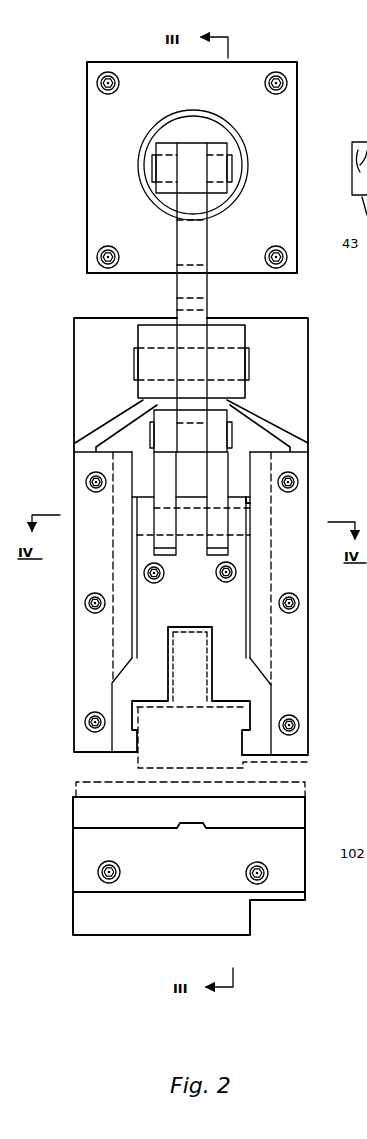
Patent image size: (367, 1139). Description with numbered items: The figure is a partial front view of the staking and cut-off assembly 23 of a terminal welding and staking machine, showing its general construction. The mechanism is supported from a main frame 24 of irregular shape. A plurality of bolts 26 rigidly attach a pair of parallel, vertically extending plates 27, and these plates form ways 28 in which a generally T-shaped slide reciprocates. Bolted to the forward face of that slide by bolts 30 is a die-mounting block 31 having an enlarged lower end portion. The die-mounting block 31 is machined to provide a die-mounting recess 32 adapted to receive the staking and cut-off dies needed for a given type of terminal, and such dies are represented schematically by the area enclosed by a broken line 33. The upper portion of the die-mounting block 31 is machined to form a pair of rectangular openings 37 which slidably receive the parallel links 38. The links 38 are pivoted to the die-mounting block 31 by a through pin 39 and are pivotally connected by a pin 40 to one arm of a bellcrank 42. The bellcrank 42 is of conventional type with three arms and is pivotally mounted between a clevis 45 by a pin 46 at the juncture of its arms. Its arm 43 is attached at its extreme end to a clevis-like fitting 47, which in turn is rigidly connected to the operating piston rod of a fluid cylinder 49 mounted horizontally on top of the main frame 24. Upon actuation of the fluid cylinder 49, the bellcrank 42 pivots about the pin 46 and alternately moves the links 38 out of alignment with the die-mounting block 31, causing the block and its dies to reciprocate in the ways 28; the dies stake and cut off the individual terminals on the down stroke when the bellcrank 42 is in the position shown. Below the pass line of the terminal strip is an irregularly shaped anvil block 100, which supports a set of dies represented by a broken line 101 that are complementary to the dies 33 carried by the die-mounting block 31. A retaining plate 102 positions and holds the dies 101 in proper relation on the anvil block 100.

The fluid cylinder 49 is at (285, 123).
The clevis-like fitting 47 is at (217, 187).
The arm of bellcrank 43 is at (187, 248).
The bellcrank 42 is at (193, 322).
The clevis 45 is at (237, 340).
The pin 46 is at (230, 373).
The main frame 24 is at (85, 342).
The parallel links 38 is at (162, 463).
The pin 40 is at (232, 443).
The plates 27 is at (90, 543).
The ways 28 is at (115, 645).
The die-mounting block 31 is at (218, 605).
The staking and cut-off assembly 23 is at (247, 503).
The through pin 39 is at (140, 523).
The rectangular openings 37 is at (218, 552).
The bolts 30 is at (150, 580).
The bolts 26 is at (90, 722).
The die-mounting recess 32 is at (230, 728).
The dies 33 is at (300, 760).
The anvil block 100 is at (102, 917).
The dies 101 is at (307, 787).
The retaining plate 102 is at (87, 875).